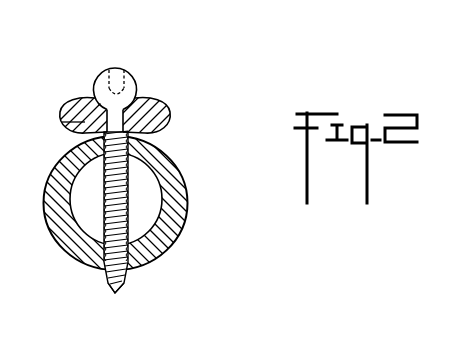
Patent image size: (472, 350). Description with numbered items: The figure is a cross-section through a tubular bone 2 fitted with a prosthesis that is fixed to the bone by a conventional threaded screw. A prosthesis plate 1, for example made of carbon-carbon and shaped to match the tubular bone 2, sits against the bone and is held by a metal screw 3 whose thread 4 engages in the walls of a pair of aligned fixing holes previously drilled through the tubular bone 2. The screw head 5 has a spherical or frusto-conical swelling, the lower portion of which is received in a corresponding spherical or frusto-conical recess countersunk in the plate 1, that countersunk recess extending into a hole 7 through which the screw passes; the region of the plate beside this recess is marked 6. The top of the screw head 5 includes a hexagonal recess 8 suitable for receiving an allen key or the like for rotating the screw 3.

The prosthesis plate 1 is at (172, 118).
The tubular bone 2 is at (188, 188).
The metal screw 3 is at (115, 294).
The thread 4 is at (123, 250).
The screw head 5 is at (134, 83).
The wing 6 is at (80, 103).
The hole 7 is at (62, 122).
The hexagonal recess 8 is at (103, 69).